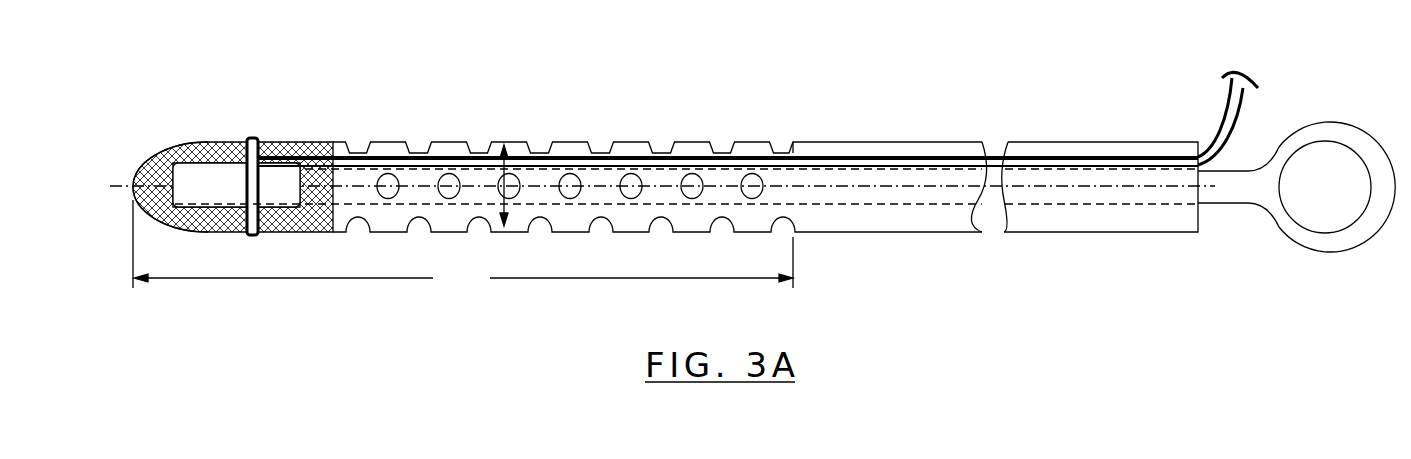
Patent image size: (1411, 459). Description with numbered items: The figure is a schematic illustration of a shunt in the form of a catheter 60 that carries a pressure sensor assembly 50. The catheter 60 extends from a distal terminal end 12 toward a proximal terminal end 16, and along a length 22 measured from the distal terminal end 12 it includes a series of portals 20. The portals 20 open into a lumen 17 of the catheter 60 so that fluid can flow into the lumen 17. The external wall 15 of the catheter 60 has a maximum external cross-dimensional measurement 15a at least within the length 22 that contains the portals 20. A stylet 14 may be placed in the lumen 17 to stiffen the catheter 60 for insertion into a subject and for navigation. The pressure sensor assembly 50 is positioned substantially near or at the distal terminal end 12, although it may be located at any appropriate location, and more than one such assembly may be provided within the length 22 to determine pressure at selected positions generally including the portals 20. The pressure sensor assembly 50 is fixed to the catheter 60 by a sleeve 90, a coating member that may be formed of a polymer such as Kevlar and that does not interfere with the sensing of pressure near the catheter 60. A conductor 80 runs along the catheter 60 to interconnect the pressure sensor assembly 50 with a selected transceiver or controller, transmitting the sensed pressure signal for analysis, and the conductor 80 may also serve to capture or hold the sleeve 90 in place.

The distal terminal end 12 is at (130, 188).
The stylet 14 is at (1325, 122).
The external wall 15 is at (453, 142).
The maximum external cross-dimensional measurement 15a is at (504, 226).
The proximal terminal end 16 is at (1200, 218).
The lumen 17 is at (1088, 208).
The portals 20 is at (782, 148).
The length 22 is at (463, 245).
The pressure sensor assembly 50 is at (208, 150).
The catheter 60 is at (915, 131).
The conductor 80 is at (570, 153).
The sleeve 90 is at (303, 147).